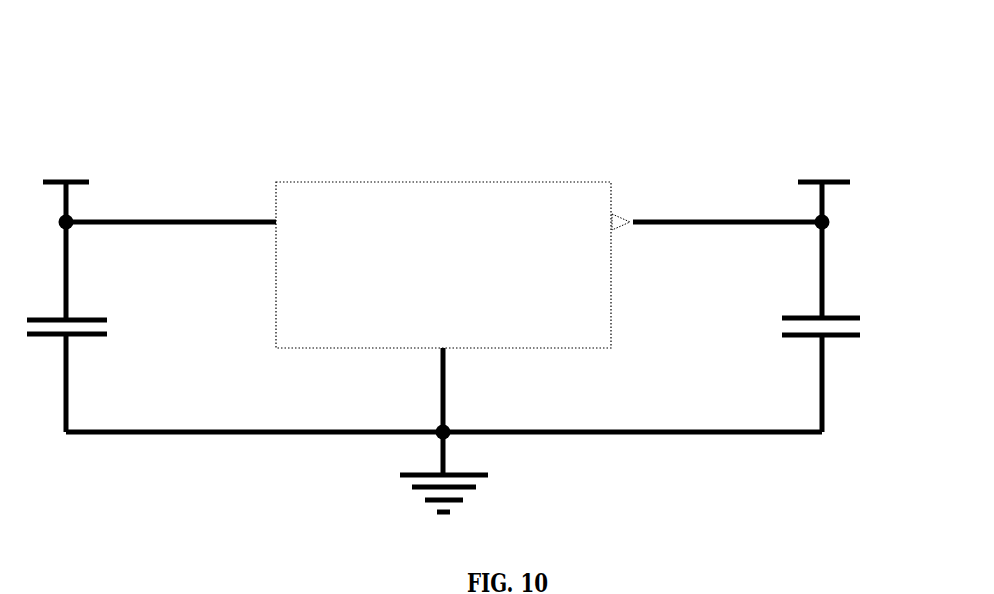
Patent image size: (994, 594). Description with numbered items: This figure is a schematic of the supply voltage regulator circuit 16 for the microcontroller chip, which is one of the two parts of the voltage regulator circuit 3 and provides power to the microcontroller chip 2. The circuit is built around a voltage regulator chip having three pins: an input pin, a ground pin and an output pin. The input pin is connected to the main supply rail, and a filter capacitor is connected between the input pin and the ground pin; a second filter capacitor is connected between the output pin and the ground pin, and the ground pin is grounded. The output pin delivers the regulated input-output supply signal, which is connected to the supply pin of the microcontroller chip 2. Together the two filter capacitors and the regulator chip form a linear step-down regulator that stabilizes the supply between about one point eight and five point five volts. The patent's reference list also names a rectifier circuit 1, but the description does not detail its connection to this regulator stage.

The supply voltage regulator circuit for the microcontroller chip 16 is at (173, 140).
The rectifier circuit 1 is at (717, 206).
The microcontroller chip 2 is at (426, 411).
The voltage regulator circuit 3 is at (171, 202).